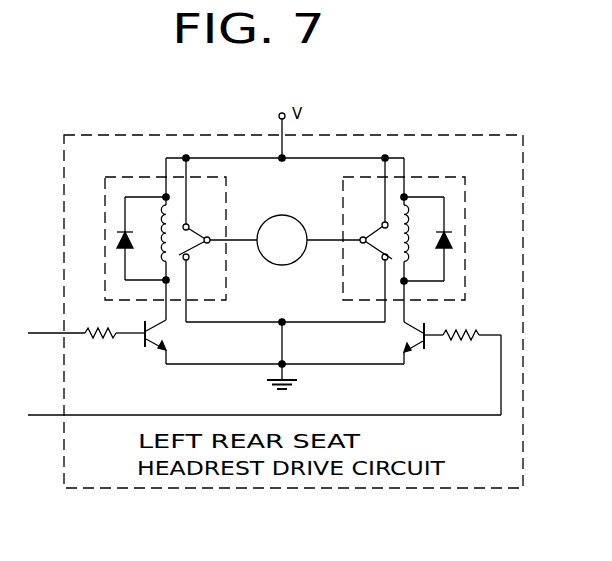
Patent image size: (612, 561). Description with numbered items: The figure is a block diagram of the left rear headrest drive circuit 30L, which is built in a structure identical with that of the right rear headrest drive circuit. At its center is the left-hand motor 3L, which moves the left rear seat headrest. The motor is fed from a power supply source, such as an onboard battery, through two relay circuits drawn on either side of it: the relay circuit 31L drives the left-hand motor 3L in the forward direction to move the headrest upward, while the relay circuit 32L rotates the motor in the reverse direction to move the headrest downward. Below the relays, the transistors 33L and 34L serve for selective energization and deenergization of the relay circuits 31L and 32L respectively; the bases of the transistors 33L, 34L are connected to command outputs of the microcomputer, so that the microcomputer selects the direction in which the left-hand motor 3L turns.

The left-hand motor 3L is at (282, 215).
The left rear headrest drive circuit 30L is at (465, 489).
The relay circuit 31L is at (226, 265).
The relay circuit 32L is at (465, 255).
The transistor 33L is at (144, 342).
The transistor 34L is at (426, 345).